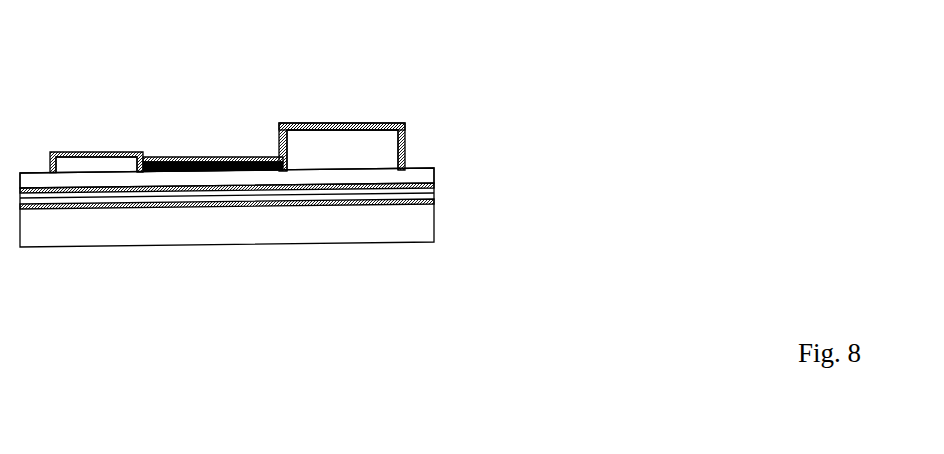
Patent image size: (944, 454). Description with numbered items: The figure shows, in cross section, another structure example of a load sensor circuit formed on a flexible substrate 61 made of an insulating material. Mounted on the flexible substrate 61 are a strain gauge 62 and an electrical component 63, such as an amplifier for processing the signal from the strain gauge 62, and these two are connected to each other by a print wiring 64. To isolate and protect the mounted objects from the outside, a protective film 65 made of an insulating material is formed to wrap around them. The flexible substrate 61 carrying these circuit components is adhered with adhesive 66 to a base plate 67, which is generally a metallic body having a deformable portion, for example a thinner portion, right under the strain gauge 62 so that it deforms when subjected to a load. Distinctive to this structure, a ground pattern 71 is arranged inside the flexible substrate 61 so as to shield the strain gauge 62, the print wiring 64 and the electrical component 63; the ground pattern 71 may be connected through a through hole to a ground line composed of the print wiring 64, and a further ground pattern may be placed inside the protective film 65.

The flexible substrate 61 is at (410, 177).
The strain gauge 62 is at (103, 163).
The electrical component 63 is at (352, 147).
The print wiring 64 is at (232, 160).
The protective film 65 is at (333, 128).
The adhesive 66 is at (435, 195).
The base plate 67 is at (407, 232).
The ground pattern 71 is at (435, 187).